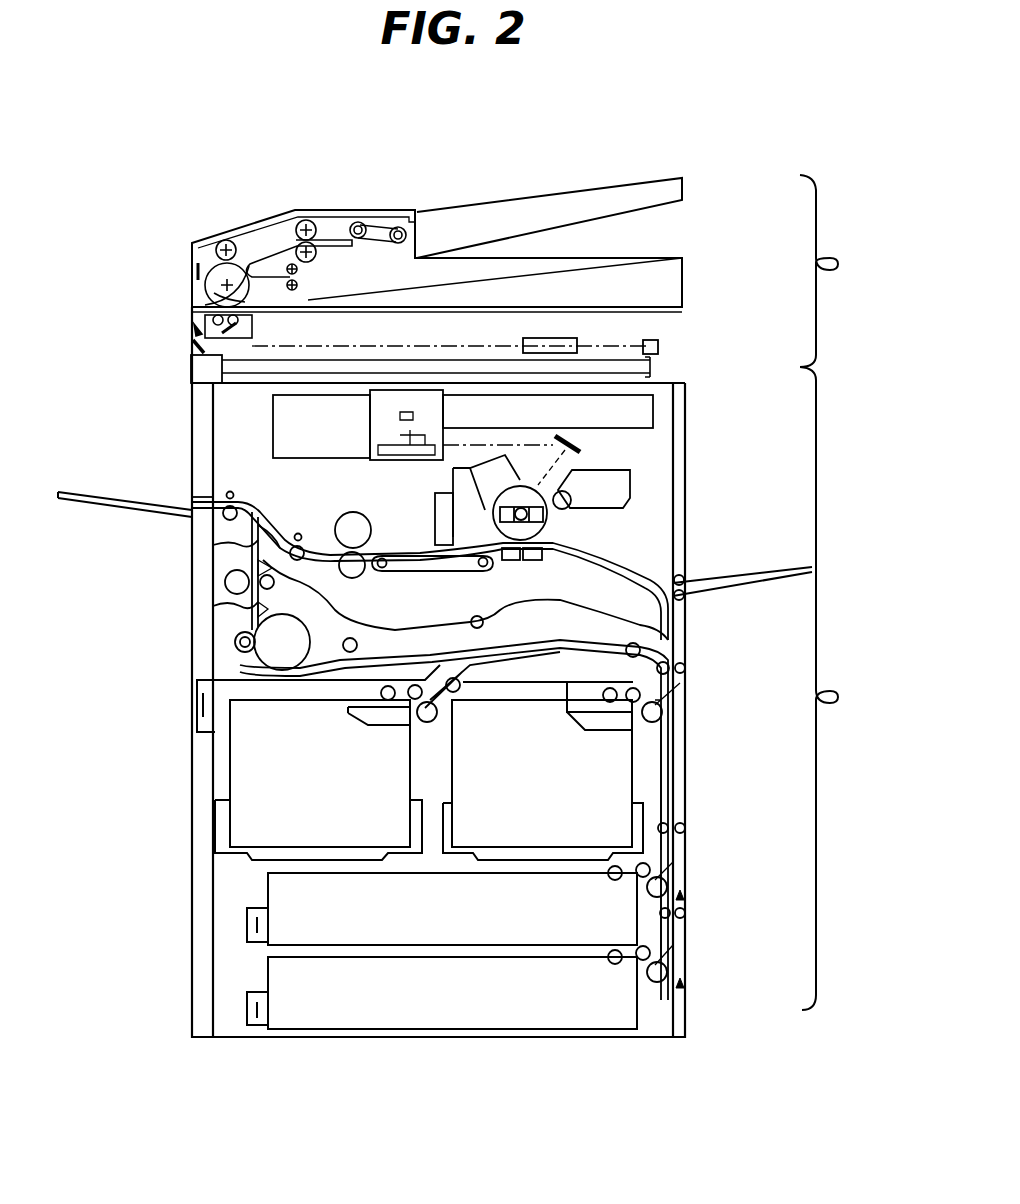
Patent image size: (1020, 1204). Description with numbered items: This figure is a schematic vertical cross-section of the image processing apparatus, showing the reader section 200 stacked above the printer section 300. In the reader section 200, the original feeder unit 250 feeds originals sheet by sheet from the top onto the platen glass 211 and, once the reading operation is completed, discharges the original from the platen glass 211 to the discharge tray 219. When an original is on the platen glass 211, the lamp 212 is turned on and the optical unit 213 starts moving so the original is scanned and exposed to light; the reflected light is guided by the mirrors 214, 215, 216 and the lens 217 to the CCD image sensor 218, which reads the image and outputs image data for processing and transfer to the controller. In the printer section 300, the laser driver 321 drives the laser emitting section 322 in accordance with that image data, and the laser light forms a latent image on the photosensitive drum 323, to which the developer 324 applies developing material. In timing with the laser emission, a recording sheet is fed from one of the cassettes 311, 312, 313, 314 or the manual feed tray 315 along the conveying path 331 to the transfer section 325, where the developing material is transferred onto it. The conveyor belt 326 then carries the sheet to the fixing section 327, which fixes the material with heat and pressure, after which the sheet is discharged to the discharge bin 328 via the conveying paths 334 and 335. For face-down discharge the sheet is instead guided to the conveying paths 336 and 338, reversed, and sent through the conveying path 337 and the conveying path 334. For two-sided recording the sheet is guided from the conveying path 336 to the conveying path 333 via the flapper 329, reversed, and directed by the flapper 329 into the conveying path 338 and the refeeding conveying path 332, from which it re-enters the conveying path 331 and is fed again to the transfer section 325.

The reader section 200 is at (838, 265).
The printer section 300 is at (840, 698).
The original feeder unit 250 is at (420, 232).
The discharge tray 219 is at (565, 270).
The platen glass 211 is at (660, 308).
The optical unit 213 is at (270, 312).
The lamp 212 is at (198, 324).
The mirror 214 is at (252, 330).
The mirror 215 is at (196, 340).
The mirror 216 is at (195, 365).
The lens 217 is at (545, 338).
The CCD image sensor 218 is at (658, 347).
The laser driver 321 is at (273, 432).
The laser emitting section 322 is at (398, 460).
The photosensitive drum 323 is at (550, 516).
The developer 324 is at (632, 485).
The transfer section 325 is at (530, 562).
The conveyor belt 326 is at (440, 572).
The fixing section 327 is at (345, 514).
The discharge bin 328 is at (120, 497).
The flapper 329 is at (213, 606).
The conveying path 331 is at (655, 572).
The refeeding conveying path 332 is at (382, 665).
The conveying path 333 is at (366, 618).
The conveying path 334 is at (205, 502).
The conveying path 335 is at (252, 504).
The conveying path 336 is at (290, 560).
The conveying path 337 is at (213, 545).
The conveying path 338 is at (245, 625).
The manual feed tray 315 is at (688, 587).
The cassette 311 is at (633, 760).
The cassette 312 is at (215, 770).
The cassette 313 is at (268, 885).
The cassette 314 is at (268, 969).